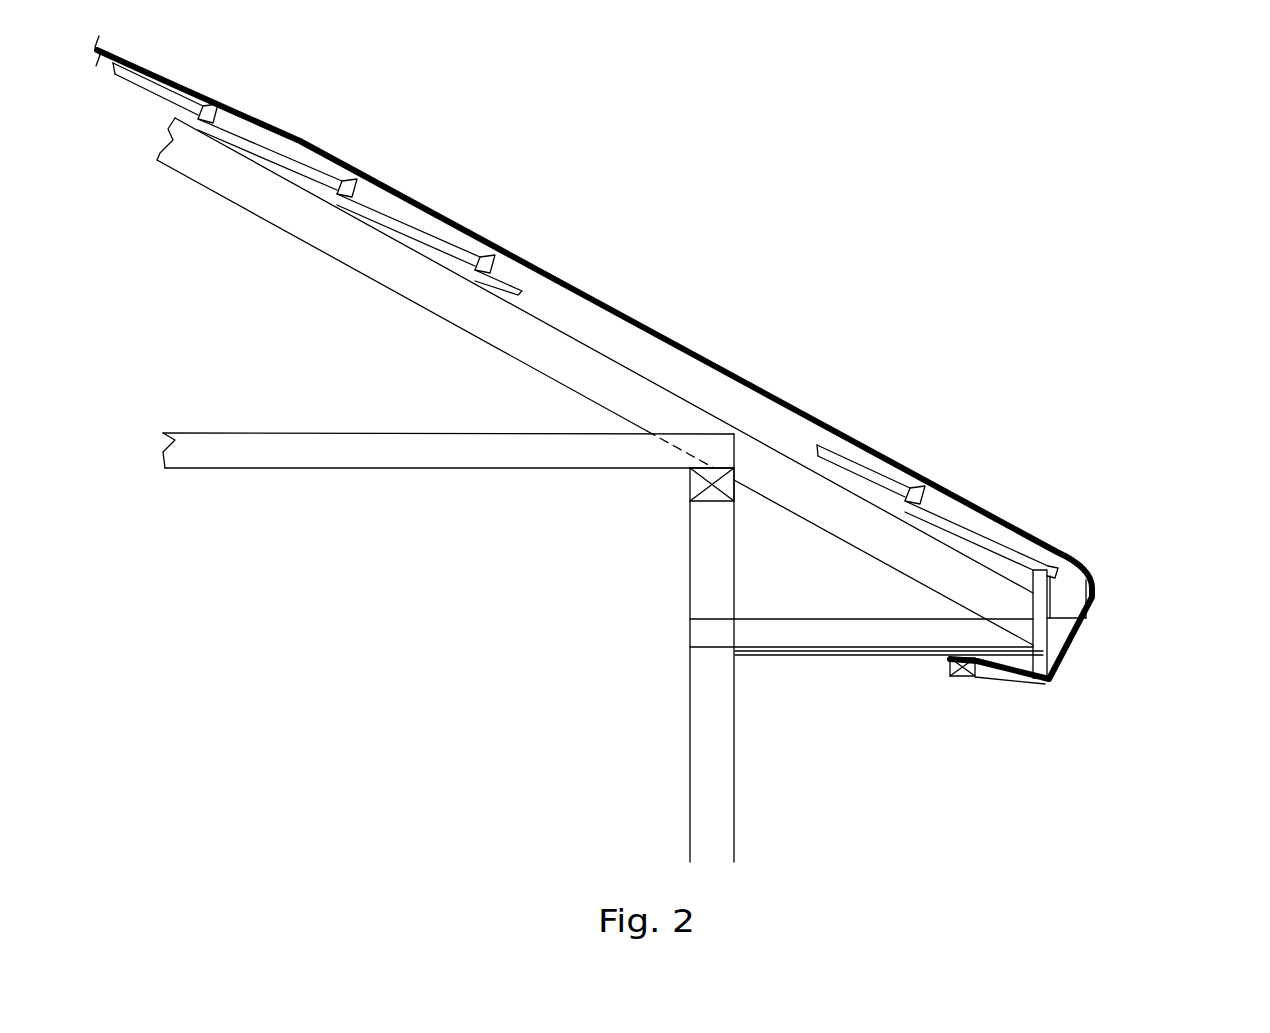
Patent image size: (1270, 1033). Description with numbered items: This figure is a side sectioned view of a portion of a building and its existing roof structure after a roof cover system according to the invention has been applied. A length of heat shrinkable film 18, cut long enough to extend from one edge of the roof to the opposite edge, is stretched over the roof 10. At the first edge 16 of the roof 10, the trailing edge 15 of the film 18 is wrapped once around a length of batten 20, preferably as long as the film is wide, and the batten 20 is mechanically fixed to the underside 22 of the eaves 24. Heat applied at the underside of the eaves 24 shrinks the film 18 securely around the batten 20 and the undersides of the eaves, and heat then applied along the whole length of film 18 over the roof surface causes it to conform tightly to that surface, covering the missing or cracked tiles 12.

The roof 10 is at (677, 150).
The missing or cracked tiles 12 is at (593, 275).
The trailing edge 15 is at (1106, 691).
The first edge 16 is at (1038, 699).
The film 18 is at (781, 400).
The batten 20 is at (965, 683).
The underside 22 is at (808, 708).
The eaves 24 is at (857, 656).